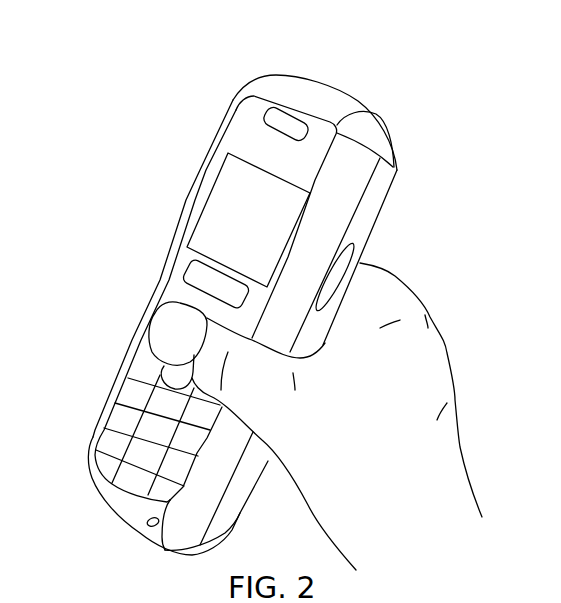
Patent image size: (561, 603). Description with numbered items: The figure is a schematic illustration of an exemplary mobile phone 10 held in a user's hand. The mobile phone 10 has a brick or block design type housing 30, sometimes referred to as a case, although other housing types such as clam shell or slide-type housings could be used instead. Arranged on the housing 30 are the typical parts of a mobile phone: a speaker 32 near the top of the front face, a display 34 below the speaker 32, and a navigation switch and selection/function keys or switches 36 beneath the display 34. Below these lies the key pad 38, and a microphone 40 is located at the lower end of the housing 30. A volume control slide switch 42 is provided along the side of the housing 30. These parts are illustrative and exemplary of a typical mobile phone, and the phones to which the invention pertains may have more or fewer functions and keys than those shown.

The mobile phone 10 is at (248, 80).
The housing 30 is at (225, 115).
The speaker 32 is at (268, 122).
The display 34 is at (228, 190).
The navigation switch and selection/function keys or switches 36 is at (168, 298).
The key pad 38 is at (140, 365).
The microphone 40 is at (152, 527).
The volume control slide switch 42 is at (345, 255).